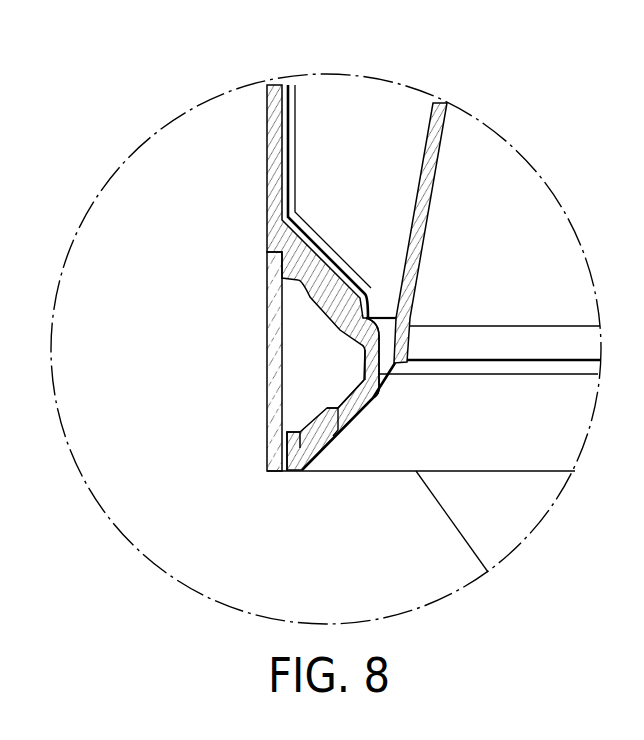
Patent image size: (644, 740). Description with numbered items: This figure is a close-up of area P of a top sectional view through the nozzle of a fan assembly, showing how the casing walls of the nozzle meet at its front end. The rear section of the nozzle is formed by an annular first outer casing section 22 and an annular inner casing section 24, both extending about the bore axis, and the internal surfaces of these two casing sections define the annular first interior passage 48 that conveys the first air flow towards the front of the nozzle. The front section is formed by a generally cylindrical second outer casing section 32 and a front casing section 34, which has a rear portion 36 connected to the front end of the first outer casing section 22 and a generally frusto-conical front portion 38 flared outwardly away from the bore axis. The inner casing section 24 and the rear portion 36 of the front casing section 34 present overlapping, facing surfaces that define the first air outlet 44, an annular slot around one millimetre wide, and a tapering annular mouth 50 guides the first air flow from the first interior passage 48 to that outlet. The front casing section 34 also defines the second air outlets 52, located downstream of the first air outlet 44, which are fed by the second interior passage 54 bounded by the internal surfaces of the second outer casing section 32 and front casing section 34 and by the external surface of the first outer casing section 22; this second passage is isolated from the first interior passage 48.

The first outer casing section 22 is at (273, 153).
The inner casing section 24 is at (427, 188).
The second outer casing section 32 is at (273, 395).
The front casing section 34 is at (343, 433).
The rear portion 36 is at (366, 355).
The front portion 38 is at (367, 398).
The first air outlet 44 is at (393, 378).
The first interior passage 48 is at (346, 88).
The mouth 50 is at (383, 298).
The second air outlets 52 is at (315, 443).
The second interior passage 54 is at (296, 345).
The area P is at (527, 538).